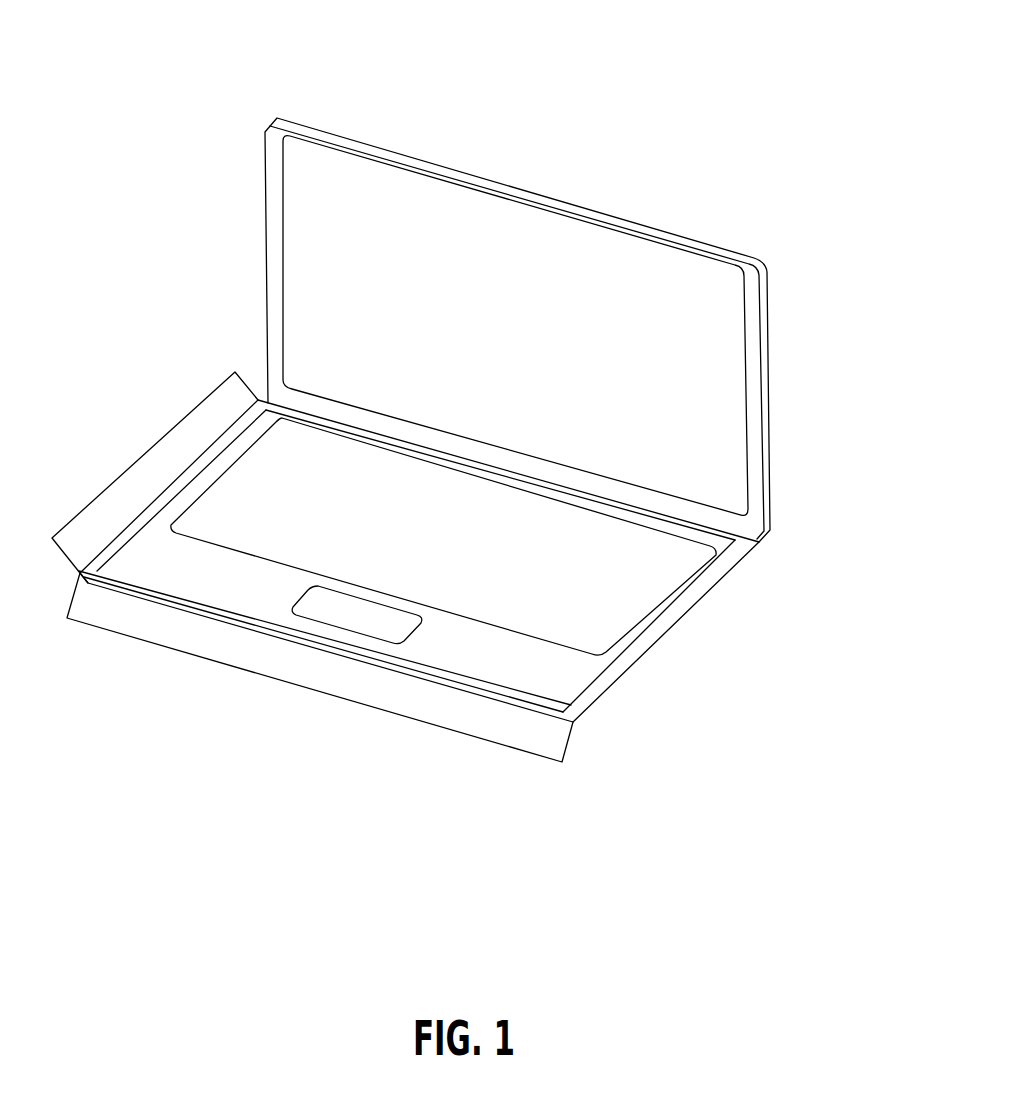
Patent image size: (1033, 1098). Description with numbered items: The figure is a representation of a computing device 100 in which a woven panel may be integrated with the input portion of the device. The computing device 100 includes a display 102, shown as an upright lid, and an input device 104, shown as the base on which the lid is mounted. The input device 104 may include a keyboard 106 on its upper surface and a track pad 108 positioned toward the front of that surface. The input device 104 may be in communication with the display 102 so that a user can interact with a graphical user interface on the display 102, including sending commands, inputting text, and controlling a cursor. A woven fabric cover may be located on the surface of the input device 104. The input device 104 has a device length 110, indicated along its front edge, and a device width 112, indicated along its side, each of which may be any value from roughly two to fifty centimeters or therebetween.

The computing device 100 is at (488, 429).
The display 102 is at (727, 380).
The input device 104 is at (732, 557).
The keyboard 106 is at (607, 588).
The track pad 108 is at (367, 620).
The device length 110 is at (312, 690).
The device width 112 is at (142, 453).